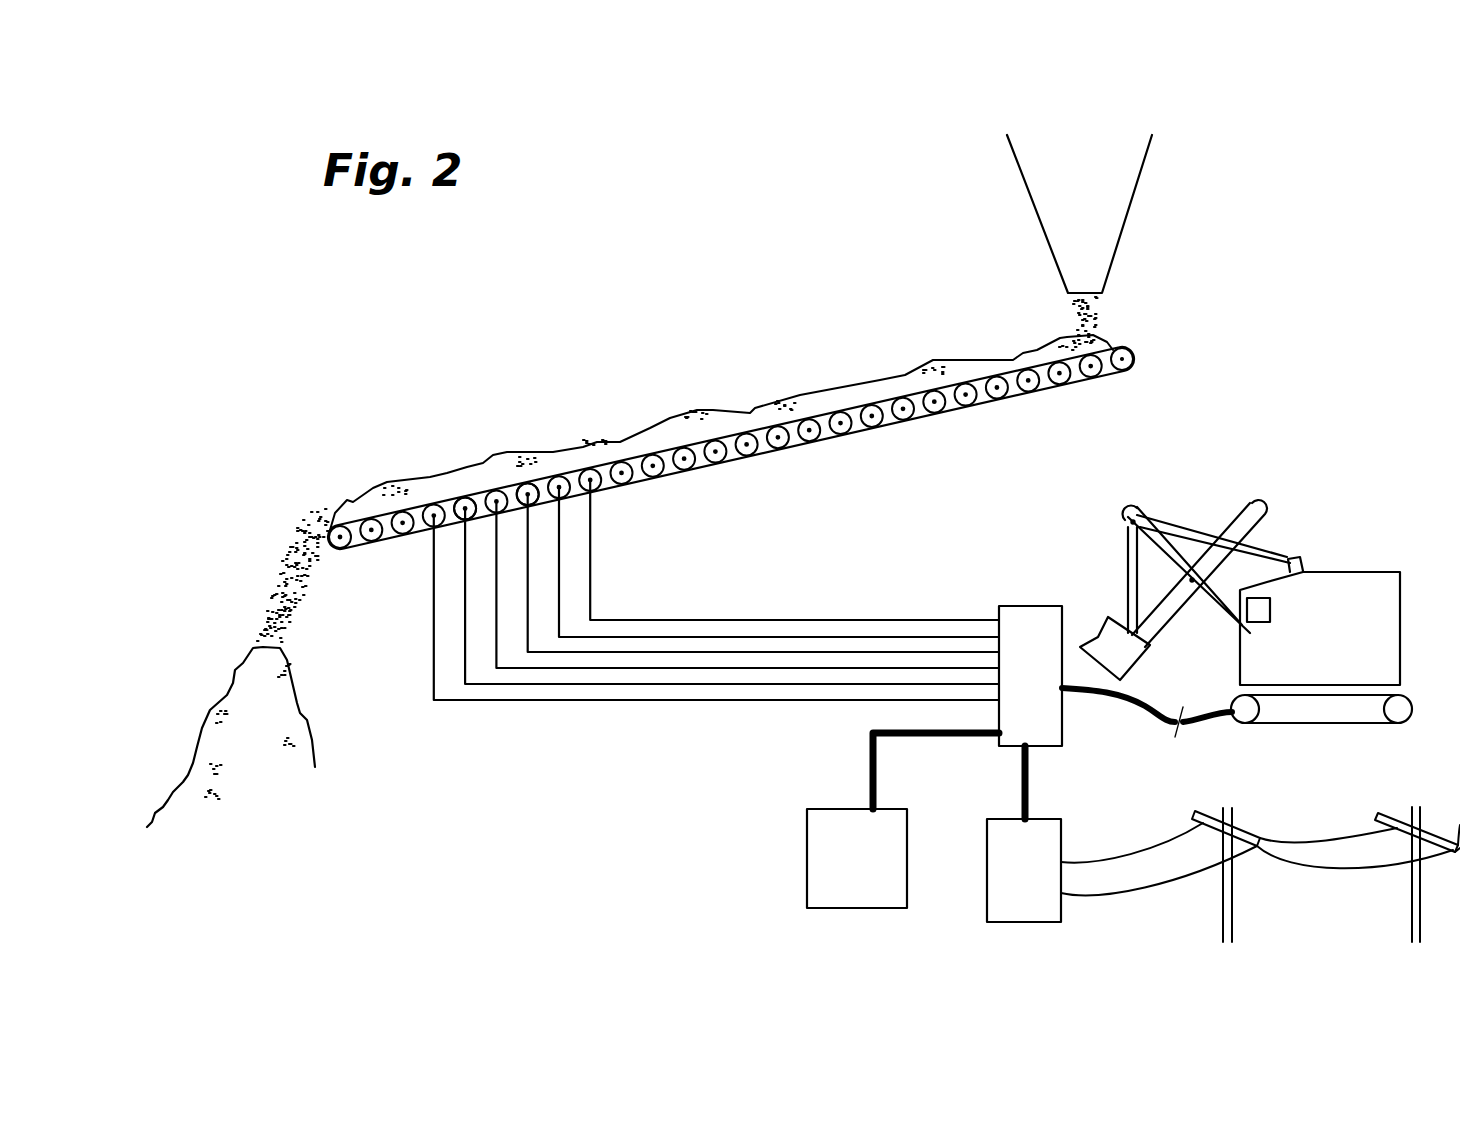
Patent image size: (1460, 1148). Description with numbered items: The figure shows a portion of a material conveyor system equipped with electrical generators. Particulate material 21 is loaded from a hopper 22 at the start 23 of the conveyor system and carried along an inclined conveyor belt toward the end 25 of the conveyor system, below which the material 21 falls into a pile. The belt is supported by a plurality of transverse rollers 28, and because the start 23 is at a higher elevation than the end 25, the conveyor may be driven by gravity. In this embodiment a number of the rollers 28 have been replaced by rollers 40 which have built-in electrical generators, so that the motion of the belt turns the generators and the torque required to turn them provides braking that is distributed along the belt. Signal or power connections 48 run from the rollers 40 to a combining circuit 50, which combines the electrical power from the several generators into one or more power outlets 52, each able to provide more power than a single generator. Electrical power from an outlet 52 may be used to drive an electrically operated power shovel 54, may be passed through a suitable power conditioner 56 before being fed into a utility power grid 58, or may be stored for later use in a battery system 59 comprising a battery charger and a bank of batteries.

The particulate material 21 is at (938, 358).
The hopper 22 is at (1077, 212).
The start of the conveyor system 23 is at (1122, 346).
The end of the conveyor system 25 is at (328, 503).
The rollers 28 is at (842, 430).
The rollers with built-in generators 40 is at (528, 484).
The sensor signal lines 48 is at (407, 618).
The combining circuit 50 is at (1043, 666).
The power outlet 52 is at (1062, 782).
The electrically operated power shovel 54 is at (1325, 617).
The power conditioner 56 is at (1011, 863).
The utility power grid 58 is at (1290, 832).
The battery system 59 is at (844, 853).